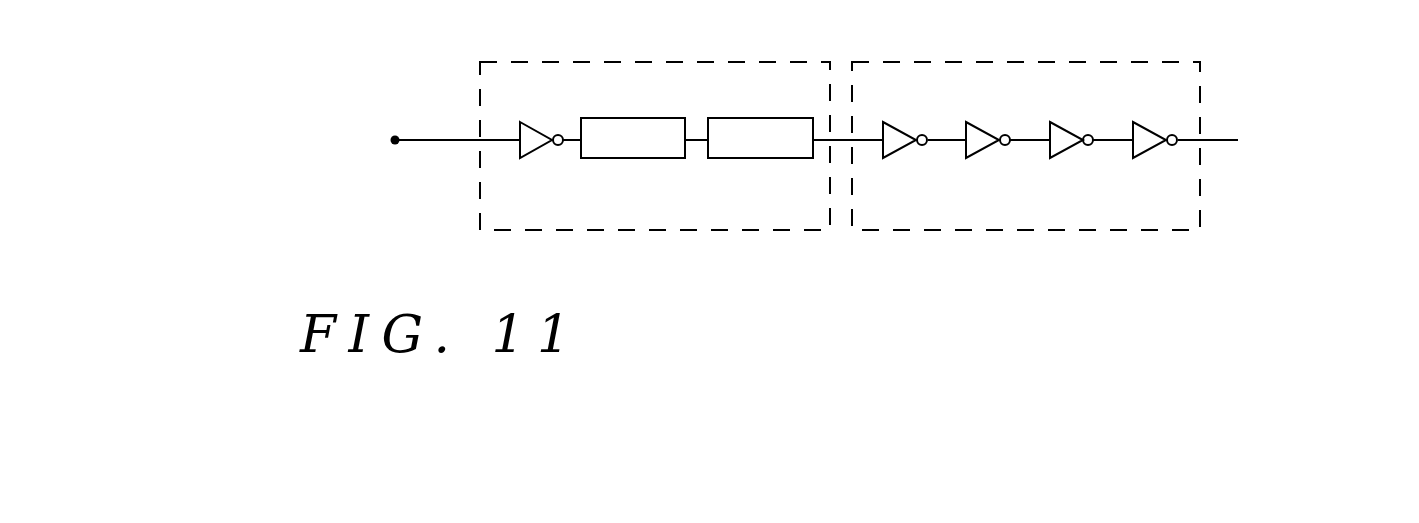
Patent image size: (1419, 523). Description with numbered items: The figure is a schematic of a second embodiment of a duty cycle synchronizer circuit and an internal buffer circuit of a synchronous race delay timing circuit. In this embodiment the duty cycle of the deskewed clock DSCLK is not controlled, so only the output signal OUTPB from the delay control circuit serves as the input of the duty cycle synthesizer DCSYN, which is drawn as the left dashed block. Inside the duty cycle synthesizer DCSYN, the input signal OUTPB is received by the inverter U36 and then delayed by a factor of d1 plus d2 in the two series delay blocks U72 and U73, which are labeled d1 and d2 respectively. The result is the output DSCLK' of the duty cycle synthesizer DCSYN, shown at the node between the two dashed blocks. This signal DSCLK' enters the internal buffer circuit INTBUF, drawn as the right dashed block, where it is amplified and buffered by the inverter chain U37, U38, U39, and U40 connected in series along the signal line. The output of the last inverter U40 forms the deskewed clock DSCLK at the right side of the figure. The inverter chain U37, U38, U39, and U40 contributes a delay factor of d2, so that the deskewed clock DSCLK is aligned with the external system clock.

The inverter U36 is at (550, 162).
The delay block U72 is at (633, 160).
The delay block U73 is at (760, 160).
The inverter U37 is at (910, 160).
The inverter U38 is at (994, 160).
The inverter U39 is at (1071, 160).
The inverter U40 is at (1154, 160).
The duty cycle synthesizer DCSYN is at (797, 231).
The internal buffer circuit INTBUF is at (1049, 231).
The output signal OUTPB is at (417, 120).
The output of the duty cycle synthesizer DSCLK' is at (843, 76).
The deskewed clock DSCLK is at (1262, 142).